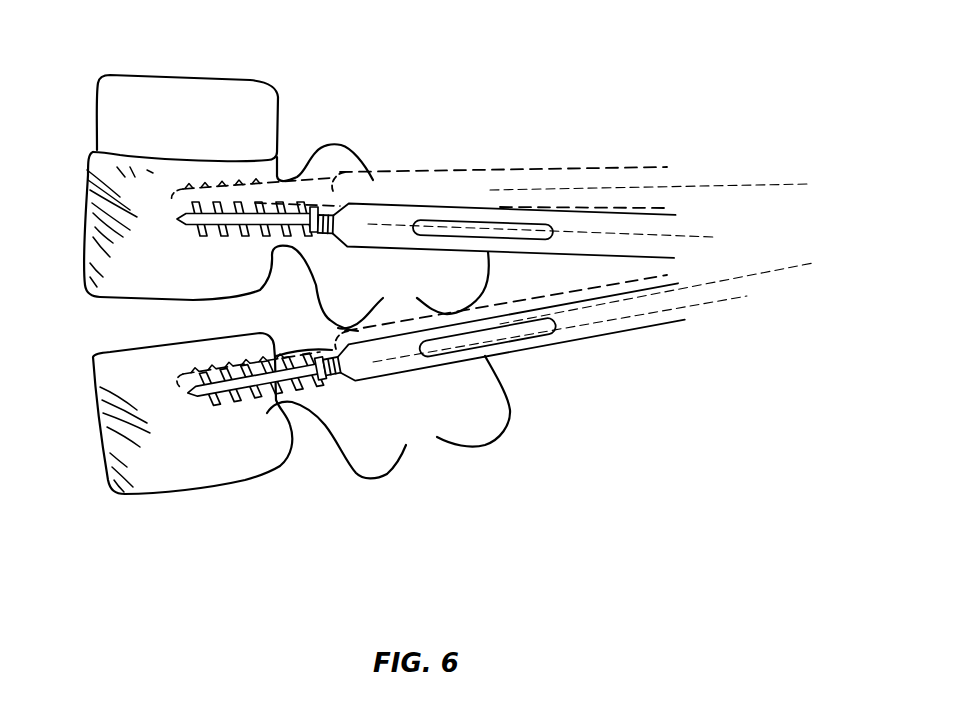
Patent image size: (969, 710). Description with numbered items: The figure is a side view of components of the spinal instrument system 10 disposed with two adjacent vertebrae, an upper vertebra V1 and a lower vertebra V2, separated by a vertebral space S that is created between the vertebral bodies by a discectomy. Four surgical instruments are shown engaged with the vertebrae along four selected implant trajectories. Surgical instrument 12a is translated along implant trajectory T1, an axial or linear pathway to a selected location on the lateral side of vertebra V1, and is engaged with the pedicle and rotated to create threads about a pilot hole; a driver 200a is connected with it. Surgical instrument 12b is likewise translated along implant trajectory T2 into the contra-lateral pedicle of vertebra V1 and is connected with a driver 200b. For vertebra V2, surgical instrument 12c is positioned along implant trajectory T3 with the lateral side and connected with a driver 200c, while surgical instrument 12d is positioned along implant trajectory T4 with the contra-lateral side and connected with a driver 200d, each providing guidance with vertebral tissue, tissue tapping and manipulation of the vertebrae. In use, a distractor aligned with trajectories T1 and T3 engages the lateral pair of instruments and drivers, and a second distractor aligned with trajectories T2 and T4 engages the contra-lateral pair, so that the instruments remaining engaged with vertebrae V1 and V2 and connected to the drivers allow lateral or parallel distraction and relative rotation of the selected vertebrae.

The spinal instrument system 10 is at (641, 41).
The surgical instrument 12a is at (332, 380).
The surgical instrument 12b is at (307, 380).
The surgical instrument 12c is at (310, 180).
The surgical instrument 12d is at (303, 200).
The driver 200a is at (590, 295).
The driver 200b is at (582, 330).
The driver 200c is at (497, 172).
The driver 200d is at (597, 227).
The implant trajectory T1 is at (667, 188).
The implant trajectory T2 is at (557, 238).
The implant trajectory T3 is at (674, 287).
The implant trajectory T4 is at (574, 323).
The vertebra V1 is at (115, 227).
The vertebra V2 is at (127, 443).
The vertebral space S is at (117, 333).